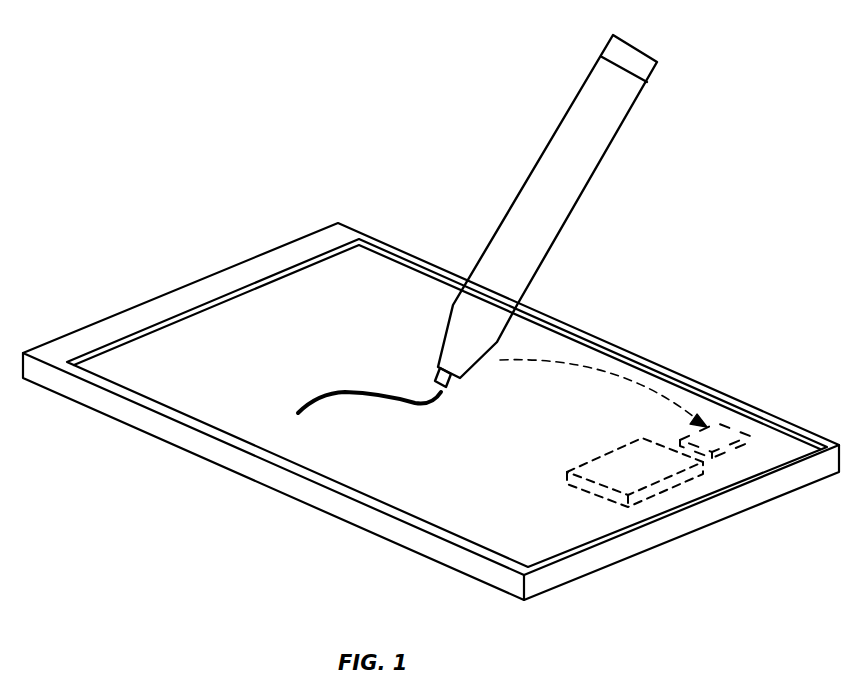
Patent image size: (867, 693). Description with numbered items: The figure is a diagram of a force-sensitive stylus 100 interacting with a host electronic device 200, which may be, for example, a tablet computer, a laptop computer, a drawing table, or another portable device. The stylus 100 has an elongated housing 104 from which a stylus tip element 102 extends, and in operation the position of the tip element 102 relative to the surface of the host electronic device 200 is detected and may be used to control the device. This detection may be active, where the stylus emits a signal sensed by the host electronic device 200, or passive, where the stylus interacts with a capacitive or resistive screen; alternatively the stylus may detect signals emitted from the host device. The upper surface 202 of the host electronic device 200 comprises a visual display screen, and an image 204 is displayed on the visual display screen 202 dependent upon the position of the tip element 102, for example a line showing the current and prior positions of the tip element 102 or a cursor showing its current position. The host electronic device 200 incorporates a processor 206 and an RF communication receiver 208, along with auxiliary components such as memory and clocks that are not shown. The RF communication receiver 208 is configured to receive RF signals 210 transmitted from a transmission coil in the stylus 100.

The force-sensitive stylus 100 is at (600, 232).
The stylus tip element 102 is at (437, 379).
The elongated housing 104 is at (560, 125).
The host electronic device 200 is at (222, 272).
The upper surface 202 is at (342, 290).
The image 204 is at (367, 397).
The processor 206 is at (673, 477).
The RF communication receiver 208 is at (737, 447).
The RF signals 210 is at (598, 372).